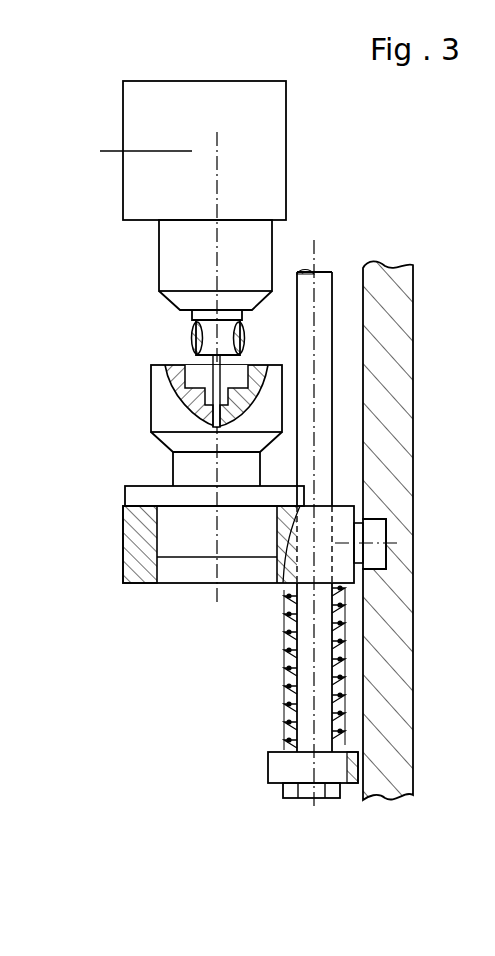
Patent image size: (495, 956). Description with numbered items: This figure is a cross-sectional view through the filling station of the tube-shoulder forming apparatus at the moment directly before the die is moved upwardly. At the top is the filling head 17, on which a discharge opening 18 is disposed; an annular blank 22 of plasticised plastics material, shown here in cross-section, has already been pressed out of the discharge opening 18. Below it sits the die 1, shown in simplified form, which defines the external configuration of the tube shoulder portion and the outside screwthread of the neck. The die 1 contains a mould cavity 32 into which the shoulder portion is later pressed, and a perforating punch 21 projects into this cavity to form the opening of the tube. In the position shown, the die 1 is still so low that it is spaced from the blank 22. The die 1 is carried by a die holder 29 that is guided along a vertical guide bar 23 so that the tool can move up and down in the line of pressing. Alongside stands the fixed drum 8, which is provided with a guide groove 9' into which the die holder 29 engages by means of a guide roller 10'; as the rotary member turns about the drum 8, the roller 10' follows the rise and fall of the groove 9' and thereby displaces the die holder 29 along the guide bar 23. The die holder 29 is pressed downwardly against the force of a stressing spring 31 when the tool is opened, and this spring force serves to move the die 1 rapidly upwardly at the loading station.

The filling head 17 is at (137, 198).
The discharge opening 18 is at (193, 319).
The annular blank 22 is at (193, 340).
The mould cavity 32 is at (236, 372).
The die 1 is at (163, 392).
The perforating punch 21 is at (190, 408).
The vertical guide bars 23 is at (331, 276).
The drum 8 is at (405, 402).
The die holder 29 is at (135, 527).
The guide groove 9' is at (412, 527).
The guide roller 10' is at (408, 546).
The stressing spring 31 is at (283, 665).